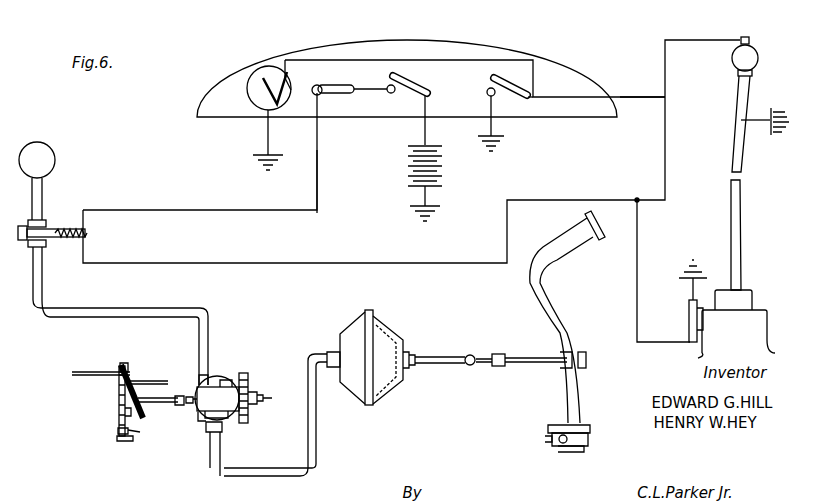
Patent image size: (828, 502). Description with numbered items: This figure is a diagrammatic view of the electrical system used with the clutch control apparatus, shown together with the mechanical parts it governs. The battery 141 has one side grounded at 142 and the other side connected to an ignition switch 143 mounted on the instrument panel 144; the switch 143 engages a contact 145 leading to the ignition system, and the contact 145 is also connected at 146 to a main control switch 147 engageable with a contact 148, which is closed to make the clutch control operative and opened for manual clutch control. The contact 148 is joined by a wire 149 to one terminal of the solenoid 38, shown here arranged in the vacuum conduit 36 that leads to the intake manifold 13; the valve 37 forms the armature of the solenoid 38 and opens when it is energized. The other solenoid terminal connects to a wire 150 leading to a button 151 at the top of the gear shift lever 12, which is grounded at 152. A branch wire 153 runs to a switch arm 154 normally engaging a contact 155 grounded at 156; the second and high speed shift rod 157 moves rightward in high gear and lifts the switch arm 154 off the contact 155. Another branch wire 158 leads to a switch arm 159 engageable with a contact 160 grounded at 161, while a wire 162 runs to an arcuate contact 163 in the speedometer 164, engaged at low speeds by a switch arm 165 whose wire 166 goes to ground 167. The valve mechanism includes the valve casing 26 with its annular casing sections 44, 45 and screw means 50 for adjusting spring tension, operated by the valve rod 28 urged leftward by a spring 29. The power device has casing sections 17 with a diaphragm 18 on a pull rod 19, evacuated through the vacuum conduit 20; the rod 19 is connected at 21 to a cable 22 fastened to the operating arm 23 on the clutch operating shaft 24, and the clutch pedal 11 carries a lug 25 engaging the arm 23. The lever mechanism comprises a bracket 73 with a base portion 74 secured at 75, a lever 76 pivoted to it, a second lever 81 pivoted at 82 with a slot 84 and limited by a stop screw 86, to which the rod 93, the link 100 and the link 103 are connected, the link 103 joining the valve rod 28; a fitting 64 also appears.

The clutch pedal 11 is at (555, 298).
The gear shift lever 12 is at (741, 215).
The intake manifold 13 is at (52, 146).
The casing sections 17 is at (388, 326).
The diaphragm 18 is at (398, 386).
The pull rod 19 is at (437, 356).
The vacuum conduit 20 is at (300, 356).
The connection 21 is at (470, 354).
The cable 22 is at (523, 356).
The operating arm 23 is at (556, 400).
The clutch operating shaft 24 is at (560, 446).
The lug 25 is at (586, 362).
The valve casing 26 is at (220, 385).
The valve rod 28 is at (204, 387).
The spring 29 is at (199, 414).
The vacuum conduit 36 is at (42, 310).
The valve 37 is at (45, 240).
The solenoid 38 is at (58, 226).
The annular casing section 44 is at (228, 380).
The annular casing section 45 is at (246, 378).
The screw means 50 is at (268, 396).
The outlet fitting 64 is at (222, 428).
The bracket 73 is at (117, 432).
The base portion 74 is at (126, 442).
The securing means 75 is at (141, 433).
The lever 76 is at (118, 392).
The second lever 81 is at (150, 360).
The pivot bolt 82 is at (128, 368).
The slot 84 is at (192, 408).
The stop screw 86 is at (124, 412).
The rod 93 is at (94, 386).
The link 100 is at (156, 380).
The link 103 is at (160, 404).
The battery 141 is at (408, 167).
The ground 142 is at (412, 210).
The ignition switch 143 is at (430, 80).
The instrument panel 144 is at (478, 44).
The contact 145 is at (391, 94).
The connection 146 is at (368, 84).
The main control switch 147 is at (337, 84).
The contact 148 is at (313, 95).
The wire 149 is at (315, 182).
The wire 150 is at (667, 148).
The button 151 is at (746, 38).
The ground 152 is at (779, 109).
The branch wire 153 is at (639, 246).
The switch arm 154 is at (689, 336).
The contact 155 is at (697, 303).
The ground 156 is at (696, 270).
The second and high speed shift rod 157 is at (712, 318).
The branch wire 158 is at (632, 97).
The switch arm 159 is at (520, 97).
The contact 160 is at (488, 95).
The ground 161 is at (497, 142).
The wire 162 is at (528, 58).
The arcuate contact 163 is at (291, 82).
The speedometer 164 is at (262, 68).
The switch arm 165 is at (247, 88).
The wire 166 is at (266, 134).
The ground 167 is at (260, 160).